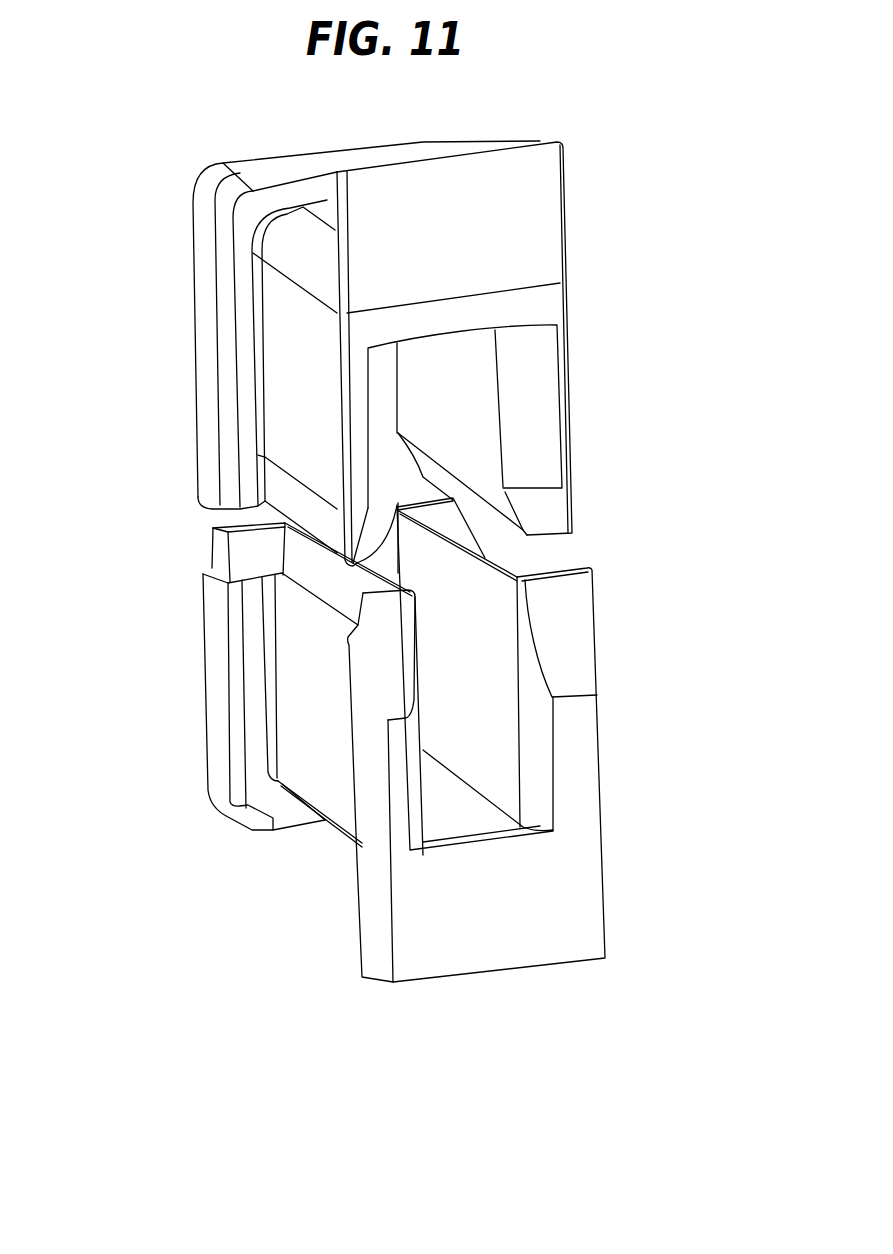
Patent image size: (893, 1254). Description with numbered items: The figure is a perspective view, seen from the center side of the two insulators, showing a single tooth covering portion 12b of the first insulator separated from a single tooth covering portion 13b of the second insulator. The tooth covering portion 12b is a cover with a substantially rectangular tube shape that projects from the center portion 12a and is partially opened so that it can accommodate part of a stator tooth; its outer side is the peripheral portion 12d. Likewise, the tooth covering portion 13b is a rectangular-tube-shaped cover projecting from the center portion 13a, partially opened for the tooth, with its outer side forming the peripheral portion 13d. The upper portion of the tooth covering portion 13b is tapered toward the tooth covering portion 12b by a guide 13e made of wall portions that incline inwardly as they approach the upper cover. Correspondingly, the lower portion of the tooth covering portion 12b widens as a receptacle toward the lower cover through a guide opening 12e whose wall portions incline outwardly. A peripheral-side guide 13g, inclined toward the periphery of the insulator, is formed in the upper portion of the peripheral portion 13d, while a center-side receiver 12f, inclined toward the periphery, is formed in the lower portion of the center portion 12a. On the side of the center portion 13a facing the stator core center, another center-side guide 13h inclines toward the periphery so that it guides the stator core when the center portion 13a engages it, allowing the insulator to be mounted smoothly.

The center portion 12a is at (540, 131).
The tooth covering portion 12b is at (300, 383).
The peripheral portion 12d is at (193, 302).
The guide opening 12e is at (468, 487).
The center-side receiver 12f is at (375, 536).
The center portion 13a is at (478, 973).
The tooth covering portion 13b is at (318, 742).
The peripheral portion 13d is at (207, 747).
The guide 13e is at (335, 582).
The peripheral-side guide 13g is at (257, 553).
The other center-side guide 13h is at (400, 643).